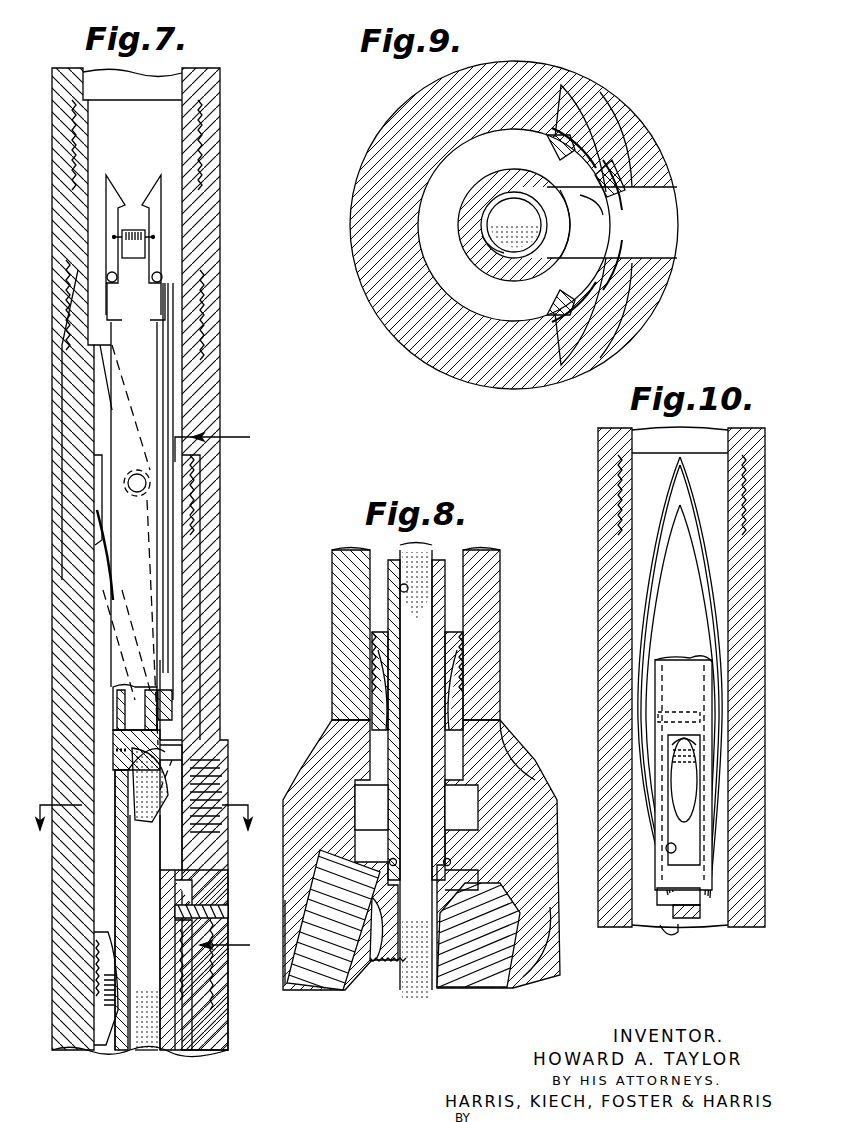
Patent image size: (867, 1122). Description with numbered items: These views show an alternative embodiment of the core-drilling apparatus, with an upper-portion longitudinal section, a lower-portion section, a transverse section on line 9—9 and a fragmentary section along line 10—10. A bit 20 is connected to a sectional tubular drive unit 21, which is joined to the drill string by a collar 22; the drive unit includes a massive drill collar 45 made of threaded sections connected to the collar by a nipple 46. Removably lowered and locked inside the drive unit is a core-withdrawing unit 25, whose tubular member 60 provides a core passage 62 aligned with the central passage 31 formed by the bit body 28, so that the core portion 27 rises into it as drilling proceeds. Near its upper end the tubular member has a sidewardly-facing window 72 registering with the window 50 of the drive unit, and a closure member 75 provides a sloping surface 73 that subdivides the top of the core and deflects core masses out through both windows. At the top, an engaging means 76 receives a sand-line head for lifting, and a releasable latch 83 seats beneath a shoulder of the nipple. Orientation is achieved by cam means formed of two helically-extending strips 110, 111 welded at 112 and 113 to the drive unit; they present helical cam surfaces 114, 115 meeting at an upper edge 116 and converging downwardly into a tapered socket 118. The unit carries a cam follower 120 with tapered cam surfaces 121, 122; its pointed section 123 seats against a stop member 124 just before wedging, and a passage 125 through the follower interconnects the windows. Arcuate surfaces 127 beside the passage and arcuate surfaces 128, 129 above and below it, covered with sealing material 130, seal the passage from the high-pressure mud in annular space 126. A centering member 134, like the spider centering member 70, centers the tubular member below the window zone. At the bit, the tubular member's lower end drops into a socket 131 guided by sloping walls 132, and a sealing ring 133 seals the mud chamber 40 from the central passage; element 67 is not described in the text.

In FIG. 7, the section line 9— 9 is at (141, 819).
In FIG. 7, the section line 10— 10 is at (216, 691).
In FIG. 8, the bit 20 is at (503, 725).
In FIG. 7, the tubular drive unit 21 is at (228, 608).
In FIG. 9, the tubular drive unit 21 is at (496, 225).
In FIG. 8, the tubular drive unit 21 is at (505, 597).
In FIG. 7, the collar 22 is at (205, 130).
In FIG. 7, the core-withdrawing unit 25 is at (110, 627).
In FIG. 9, the core-withdrawing unit 25 is at (455, 205).
In FIG. 7, the core portion 27 is at (148, 1055).
In FIG. 9, the core portion 27 is at (527, 234).
In FIG. 8, the core portion 27 is at (425, 990).
In FIG. 8, the bit body 28 is at (320, 782).
In FIG. 10, the bit body 28 is at (680, 716).
In FIG. 8, the central passage 31 is at (410, 990).
In FIG. 8, the mud chamber 40 is at (485, 792).
In FIG. 7, the drill collar 45 is at (216, 568).
In FIG. 7, the nipple 46 is at (205, 207).
In FIG. 7, the window 50 is at (218, 740).
In FIG. 9, the window 50 is at (628, 258).
In FIG. 7, the tubular member 60 is at (118, 872).
In FIG. 8, the tubular member 60 is at (390, 750).
In FIG. 10, the tubular member 60 is at (655, 682).
In FIG. 9, the core passage 62 is at (490, 250).
In FIG. 8, the core passage 62 is at (400, 588).
In FIG. 8, the recess 67 is at (500, 762).
In FIG. 8, the centering member 70 is at (470, 652).
In FIG. 7, the window 72 is at (178, 757).
In FIG. 9, the window 72 is at (560, 262).
In FIG. 10, the window 72 is at (670, 778).
In FIG. 7, the sloping surface 73 is at (140, 800).
In FIG. 10, the sloping surface 73 is at (692, 775).
In FIG. 7, the closure member 75 is at (112, 750).
In FIG. 10, the closure member 75 is at (700, 740).
In FIG. 7, the engaging means 76 is at (170, 292).
In FIG. 7, the latch 83 is at (98, 372).
In FIG. 7, the helically-extending strip 110 is at (92, 497).
In FIG. 9, the helically-extending strip 110 is at (600, 145).
In FIG. 10, the helically-extending strip 110 is at (695, 512).
In FIG. 9, the helically-extending strip 111 is at (580, 300).
In FIG. 10, the helically-extending strip 111 is at (665, 512).
In FIG. 9, the weld 112 is at (560, 112).
In FIG. 9, the weld 113 is at (565, 310).
In FIG. 9, the cam surface 114 is at (625, 160).
In FIG. 10, the cam surface 114 is at (710, 560).
In FIG. 9, the cam surface 115 is at (585, 295).
In FIG. 10, the cam surface 115 is at (648, 560).
In FIG. 7, the upper edge 116 is at (88, 452).
In FIG. 10, the upper edge 116 is at (620, 450).
In FIG. 9, the tapered socket 118 is at (590, 275).
In FIG. 7, the cam follower 120 is at (182, 713).
In FIG. 9, the cam follower 120 is at (620, 190).
In FIG. 10, the cam follower 120 is at (650, 733).
In FIG. 9, the tapered cam surface 121 is at (550, 155).
In FIG. 10, the tapered cam surface 121 is at (728, 815).
In FIG. 9, the tapered cam surface 122 is at (550, 295).
In FIG. 10, the tapered cam surface 122 is at (648, 817).
In FIG. 7, the pointed section 123 is at (192, 915).
In FIG. 10, the pointed section 123 is at (665, 935).
In FIG. 7, the stop member 124 is at (195, 932).
In FIG. 10, the stop member 124 is at (695, 920).
In FIG. 7, the passage 125 is at (182, 752).
In FIG. 9, the passage 125 is at (600, 200).
In FIG. 10, the passage 125 is at (685, 878).
In FIG. 7, the annular space 126 is at (182, 672).
In FIG. 9, the annular space 126 is at (405, 340).
In FIG. 9, the arcuate surface 127 is at (580, 200).
In FIG. 10, the arcuate surface 127 is at (645, 750).
In FIG. 7, the arcuate surface 128 is at (190, 735).
In FIG. 7, the arcuate surface 129 is at (192, 895).
In FIG. 10, the arcuate surface 129 is at (675, 895).
In FIG. 7, the sealing material 130 is at (192, 880).
In FIG. 9, the sealing material 130 is at (590, 282).
In FIG. 8, the socket 131 is at (470, 858).
In FIG. 10, the socket 131 is at (668, 860).
In FIG. 8, the sloping wall 132 is at (470, 812).
In FIG. 10, the sloping wall 132 is at (665, 778).
In FIG. 8, the sealing ring 133 is at (470, 836).
In FIG. 10, the sealing ring 133 is at (672, 830).
In FIG. 7, the centering member 134 is at (185, 1015).